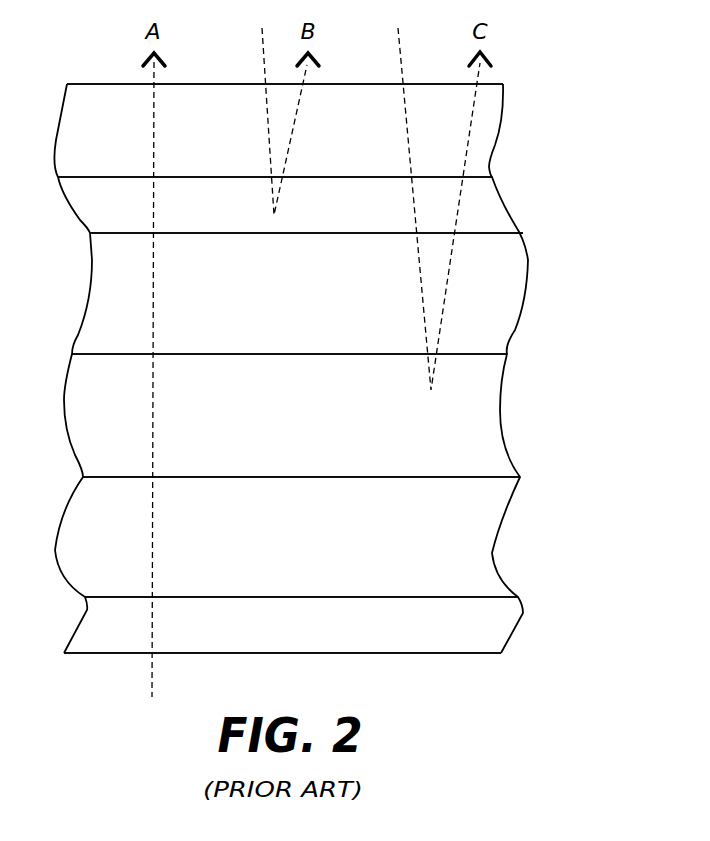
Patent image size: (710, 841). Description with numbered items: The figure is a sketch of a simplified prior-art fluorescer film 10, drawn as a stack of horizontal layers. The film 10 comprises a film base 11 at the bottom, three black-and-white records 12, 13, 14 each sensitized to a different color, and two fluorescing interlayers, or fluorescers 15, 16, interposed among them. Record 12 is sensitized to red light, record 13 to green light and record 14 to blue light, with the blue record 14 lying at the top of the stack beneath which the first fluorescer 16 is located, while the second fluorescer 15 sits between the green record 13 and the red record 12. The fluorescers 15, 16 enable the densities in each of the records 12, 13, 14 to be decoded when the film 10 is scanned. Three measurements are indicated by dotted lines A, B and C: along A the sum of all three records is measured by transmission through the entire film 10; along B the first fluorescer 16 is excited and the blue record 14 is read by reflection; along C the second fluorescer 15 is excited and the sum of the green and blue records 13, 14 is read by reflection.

The fluorescer film 10 is at (597, 255).
The film base 11 is at (361, 638).
The red sensitized record 12 is at (361, 552).
The green sensitized record 13 is at (361, 307).
The blue sensitized record 14 is at (361, 145).
The second fluorescer 15 is at (361, 427).
The first fluorescer 16 is at (361, 220).